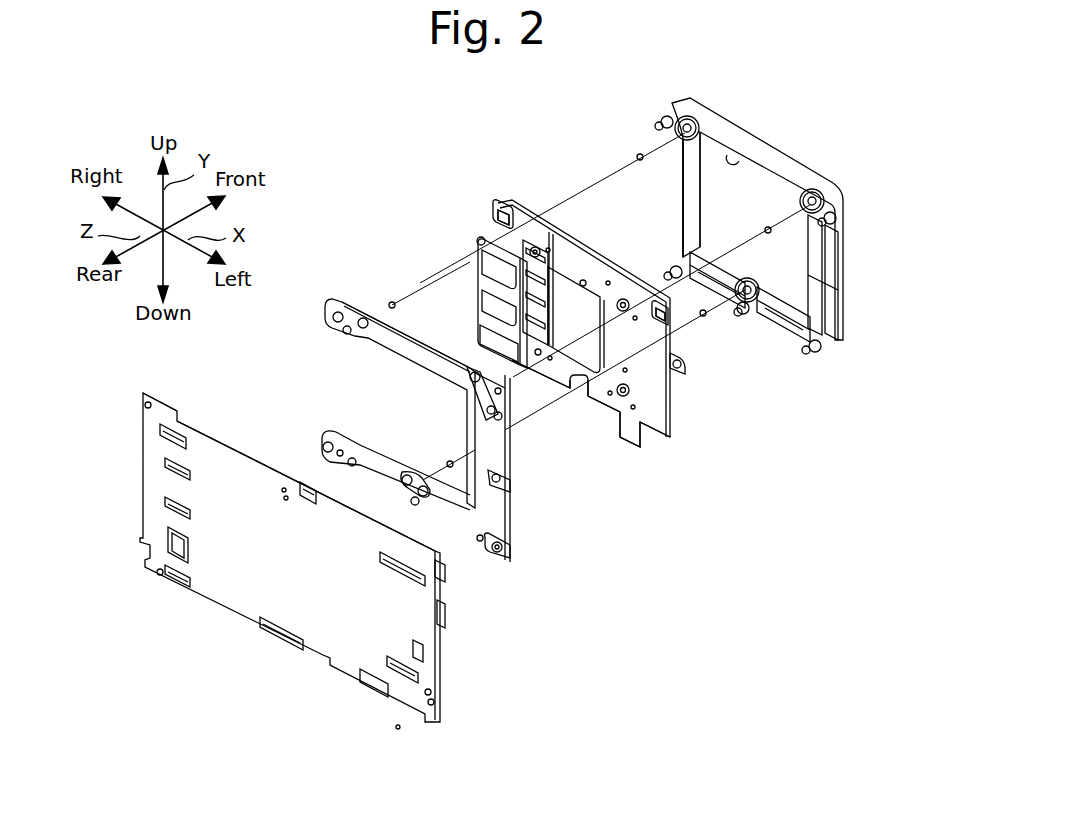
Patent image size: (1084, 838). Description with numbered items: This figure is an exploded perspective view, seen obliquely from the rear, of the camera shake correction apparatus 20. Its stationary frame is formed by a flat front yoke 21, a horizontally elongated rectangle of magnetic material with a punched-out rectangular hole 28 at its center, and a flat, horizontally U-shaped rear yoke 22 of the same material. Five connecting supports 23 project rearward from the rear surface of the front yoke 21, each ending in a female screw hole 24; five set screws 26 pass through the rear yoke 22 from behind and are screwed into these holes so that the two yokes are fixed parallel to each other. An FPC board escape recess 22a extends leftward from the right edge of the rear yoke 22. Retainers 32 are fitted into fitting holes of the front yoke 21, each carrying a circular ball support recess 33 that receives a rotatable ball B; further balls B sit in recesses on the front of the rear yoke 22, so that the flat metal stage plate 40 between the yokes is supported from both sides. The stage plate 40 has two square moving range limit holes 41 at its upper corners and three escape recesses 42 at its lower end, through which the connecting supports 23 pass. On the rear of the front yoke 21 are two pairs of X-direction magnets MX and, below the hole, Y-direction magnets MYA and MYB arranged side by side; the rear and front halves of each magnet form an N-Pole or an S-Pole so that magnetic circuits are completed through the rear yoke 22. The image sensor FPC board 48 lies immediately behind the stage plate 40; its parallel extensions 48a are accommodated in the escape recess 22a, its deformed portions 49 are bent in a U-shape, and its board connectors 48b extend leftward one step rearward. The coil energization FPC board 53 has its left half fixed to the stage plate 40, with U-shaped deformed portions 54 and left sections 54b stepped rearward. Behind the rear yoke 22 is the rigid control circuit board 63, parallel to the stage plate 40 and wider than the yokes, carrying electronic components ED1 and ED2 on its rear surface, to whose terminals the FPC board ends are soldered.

The camera shake correction apparatus 20 is at (886, 480).
The front yoke 21 is at (843, 342).
The rear yoke 22 is at (510, 562).
The FPC board escape recess 22a is at (392, 350).
The connecting supports 23 is at (663, 120).
The female screw hole 24 is at (655, 124).
The set screws 26 is at (337, 313).
The rectangular hole 28 is at (736, 152).
The retainer 32 is at (689, 120).
The ball support recess 33 is at (695, 120).
The stage plate 40 is at (680, 372).
The moving range limit holes 41 is at (496, 206).
The escape recesses 42 is at (578, 415).
The image sensor FPC board 48 is at (562, 293).
The parallel extensions 48a is at (518, 300).
The board connectors 48b is at (503, 267).
The deformed portions 49 is at (498, 240).
The coil energization FPC board 53 is at (612, 430).
The deformed portions 54 is at (500, 317).
The left sections 54b is at (508, 360).
The control circuit board 63 is at (430, 655).
The balls B is at (638, 155).
The electronic components ED1 is at (186, 440).
The electronic components ED2 is at (413, 650).
The X-direction magnets MX is at (812, 250).
The Y-direction magnet MYA is at (705, 272).
The Y-direction magnet MYB is at (778, 322).
The N-pole N-Pole is at (620, 148).
The S-pole S-Pole is at (822, 252).